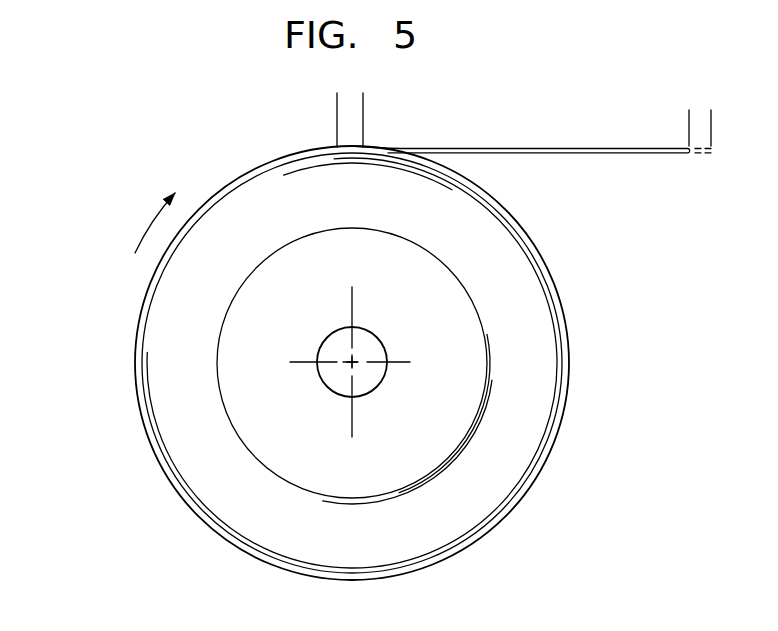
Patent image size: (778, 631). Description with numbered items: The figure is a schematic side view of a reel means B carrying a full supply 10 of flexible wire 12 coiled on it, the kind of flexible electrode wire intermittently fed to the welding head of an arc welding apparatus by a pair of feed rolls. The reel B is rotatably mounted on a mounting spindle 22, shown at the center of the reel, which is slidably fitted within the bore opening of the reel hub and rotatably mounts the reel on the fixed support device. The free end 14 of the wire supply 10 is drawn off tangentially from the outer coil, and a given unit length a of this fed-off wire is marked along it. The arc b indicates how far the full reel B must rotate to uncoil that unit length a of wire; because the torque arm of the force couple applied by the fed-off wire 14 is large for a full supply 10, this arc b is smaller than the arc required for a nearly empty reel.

The wire supply 10 is at (213, 200).
The flexible wire 12 is at (252, 178).
The free end of the wire supply 14 is at (537, 147).
The mounting spindle 22 is at (327, 347).
The reel means B is at (148, 280).
The unit length of wire a is at (745, 121).
The arc of rotation for a full reel b is at (413, 108).